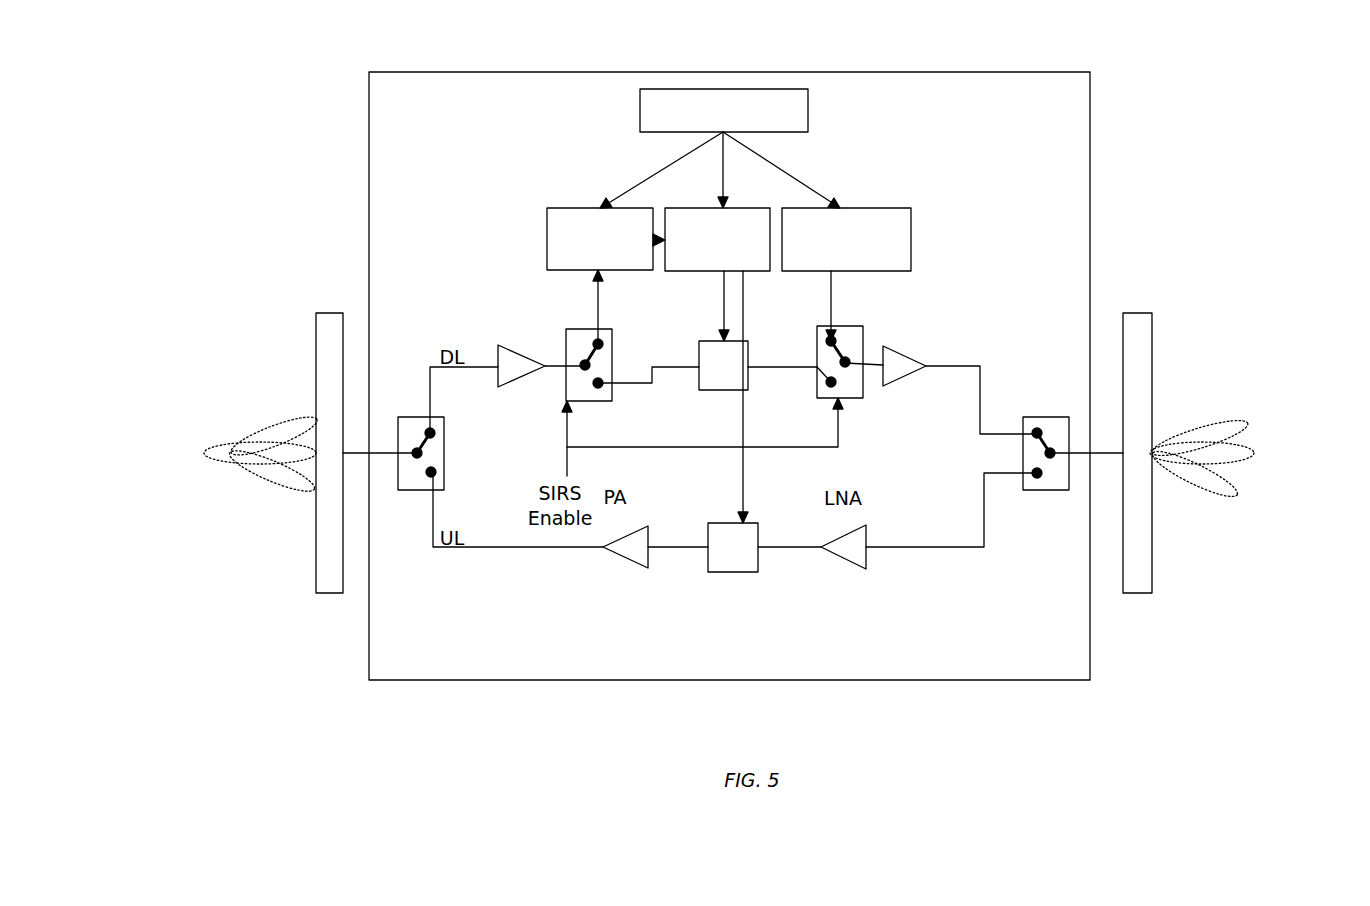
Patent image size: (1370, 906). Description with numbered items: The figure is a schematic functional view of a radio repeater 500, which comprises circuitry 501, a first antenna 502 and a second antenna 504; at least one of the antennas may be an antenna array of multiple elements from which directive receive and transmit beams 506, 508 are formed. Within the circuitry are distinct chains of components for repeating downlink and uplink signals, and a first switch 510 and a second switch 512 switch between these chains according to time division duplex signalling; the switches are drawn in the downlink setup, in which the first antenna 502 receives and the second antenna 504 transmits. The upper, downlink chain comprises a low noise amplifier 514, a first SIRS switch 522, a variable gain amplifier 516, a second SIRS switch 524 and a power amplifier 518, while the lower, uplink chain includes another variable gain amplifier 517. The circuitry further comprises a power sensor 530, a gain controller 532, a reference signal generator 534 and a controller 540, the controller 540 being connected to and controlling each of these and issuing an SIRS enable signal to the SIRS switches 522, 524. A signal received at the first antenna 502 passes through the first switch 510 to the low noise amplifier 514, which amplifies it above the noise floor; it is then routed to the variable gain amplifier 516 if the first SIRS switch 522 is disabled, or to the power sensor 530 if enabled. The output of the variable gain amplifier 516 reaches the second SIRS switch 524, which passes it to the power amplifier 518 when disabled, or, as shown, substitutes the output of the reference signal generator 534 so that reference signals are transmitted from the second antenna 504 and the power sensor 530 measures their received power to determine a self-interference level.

The radio repeater 500 is at (178, 223).
The circuitry 501 is at (368, 103).
The first antenna 502 is at (323, 311).
The second antenna 504 is at (1152, 585).
The receive and transmit beam 506 is at (232, 417).
The receive and transmit beam 508 is at (1253, 455).
The first switch 510 is at (417, 413).
The second switch 512 is at (1028, 490).
The low noise amplifier 514 is at (497, 345).
The variable gain amplifier 516 is at (748, 380).
The variable gain amplifier 517 is at (758, 558).
The power amplifier 518 is at (917, 370).
The first SIRS switch 522 is at (583, 402).
The second SIRS switch 524 is at (845, 398).
The power sensor 530 is at (585, 207).
The gain controller 532 is at (705, 207).
The reference signal generator 534 is at (812, 207).
The controller 540 is at (640, 115).